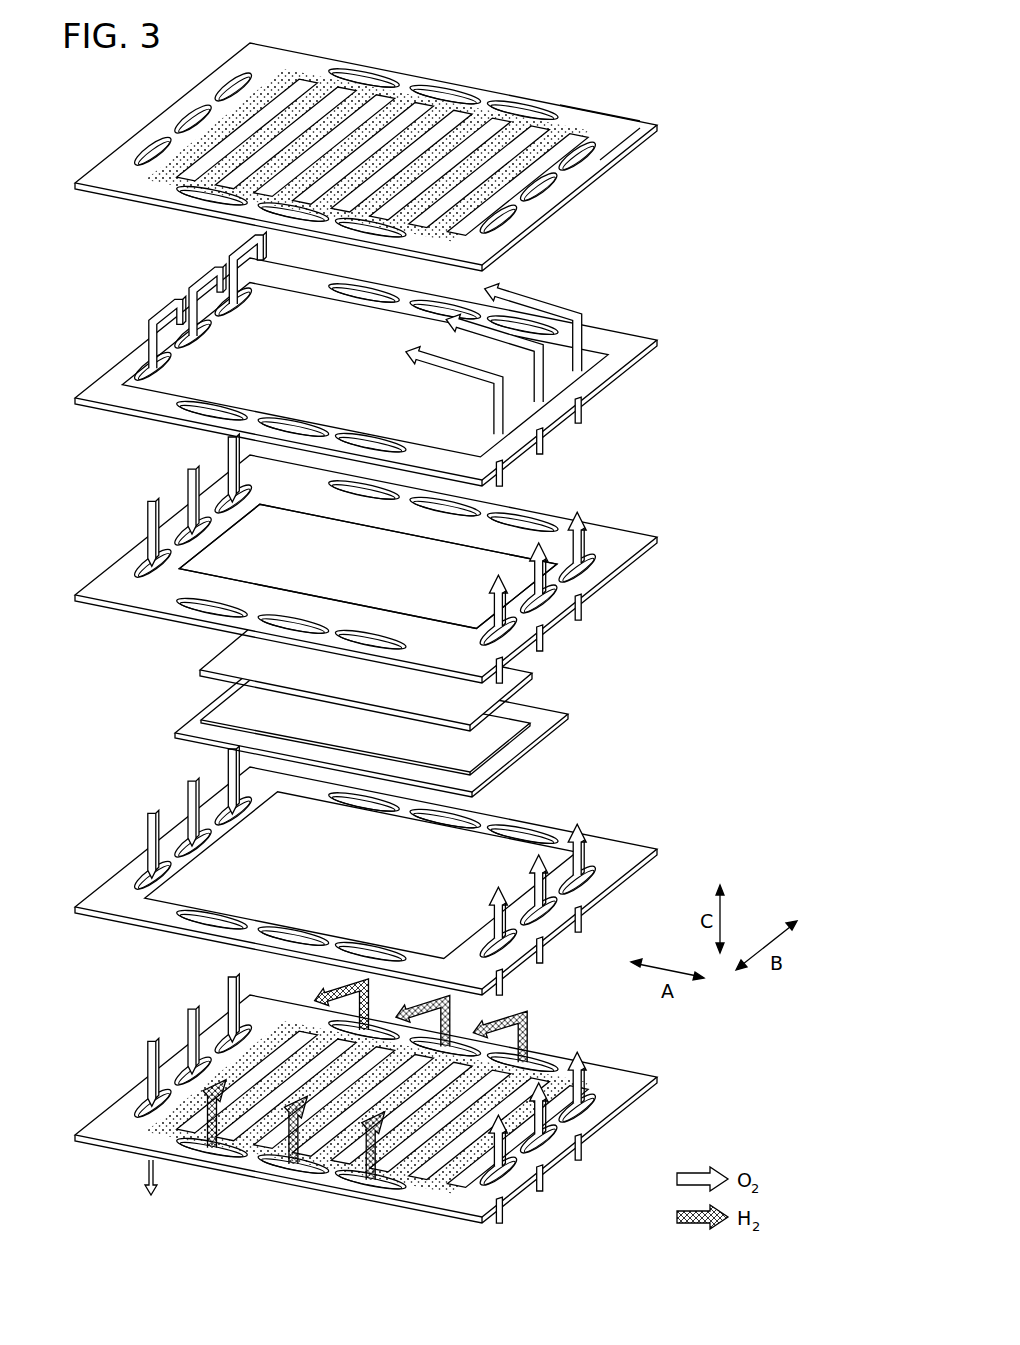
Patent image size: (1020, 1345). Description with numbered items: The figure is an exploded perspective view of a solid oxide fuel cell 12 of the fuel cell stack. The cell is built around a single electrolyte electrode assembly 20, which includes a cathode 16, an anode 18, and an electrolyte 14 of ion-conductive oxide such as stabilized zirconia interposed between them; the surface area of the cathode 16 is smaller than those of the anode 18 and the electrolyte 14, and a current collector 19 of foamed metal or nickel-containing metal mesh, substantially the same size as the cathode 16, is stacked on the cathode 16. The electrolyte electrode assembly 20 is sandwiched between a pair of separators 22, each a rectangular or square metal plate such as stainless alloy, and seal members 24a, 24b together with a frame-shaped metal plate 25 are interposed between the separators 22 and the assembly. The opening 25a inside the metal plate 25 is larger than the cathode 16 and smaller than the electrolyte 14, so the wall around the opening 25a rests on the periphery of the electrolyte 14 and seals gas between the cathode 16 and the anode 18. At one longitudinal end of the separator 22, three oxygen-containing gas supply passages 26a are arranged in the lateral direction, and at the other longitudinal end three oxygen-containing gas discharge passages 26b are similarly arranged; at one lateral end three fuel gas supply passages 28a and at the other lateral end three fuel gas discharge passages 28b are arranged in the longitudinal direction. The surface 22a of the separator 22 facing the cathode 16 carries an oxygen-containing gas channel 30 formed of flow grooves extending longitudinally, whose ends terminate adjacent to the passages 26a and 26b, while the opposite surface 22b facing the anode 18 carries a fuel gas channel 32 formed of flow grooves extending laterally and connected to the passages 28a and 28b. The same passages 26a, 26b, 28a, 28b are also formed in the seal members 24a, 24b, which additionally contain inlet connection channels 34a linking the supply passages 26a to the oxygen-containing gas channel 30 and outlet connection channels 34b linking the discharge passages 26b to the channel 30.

The solid oxide fuel cell 12 is at (683, 48).
The electrolyte 14 is at (570, 722).
The cathode 16 is at (507, 732).
The anode 18 is at (553, 733).
The current collector 19 is at (387, 693).
The electrolyte electrode assembly 20 is at (428, 707).
The separator 22 is at (643, 122).
The surface 22a is at (628, 163).
The surface 22b is at (604, 122).
The seal member 24a is at (623, 335).
The seal member 24b is at (622, 850).
The metal plate 25 is at (387, 569).
The opening 25a is at (490, 567).
The oxygen-containing gas supply passage 26a is at (560, 187).
The oxygen-containing gas discharge passage 26b is at (153, 140).
The fuel gas supply passage 28a is at (437, 93).
The fuel gas discharge passage 28b is at (200, 198).
The oxygen-containing gas channel 30 is at (273, 83).
The fuel gas channel 32 is at (432, 1177).
The inlet connection channel 34a is at (485, 432).
The outlet connection channel 34b is at (171, 372).